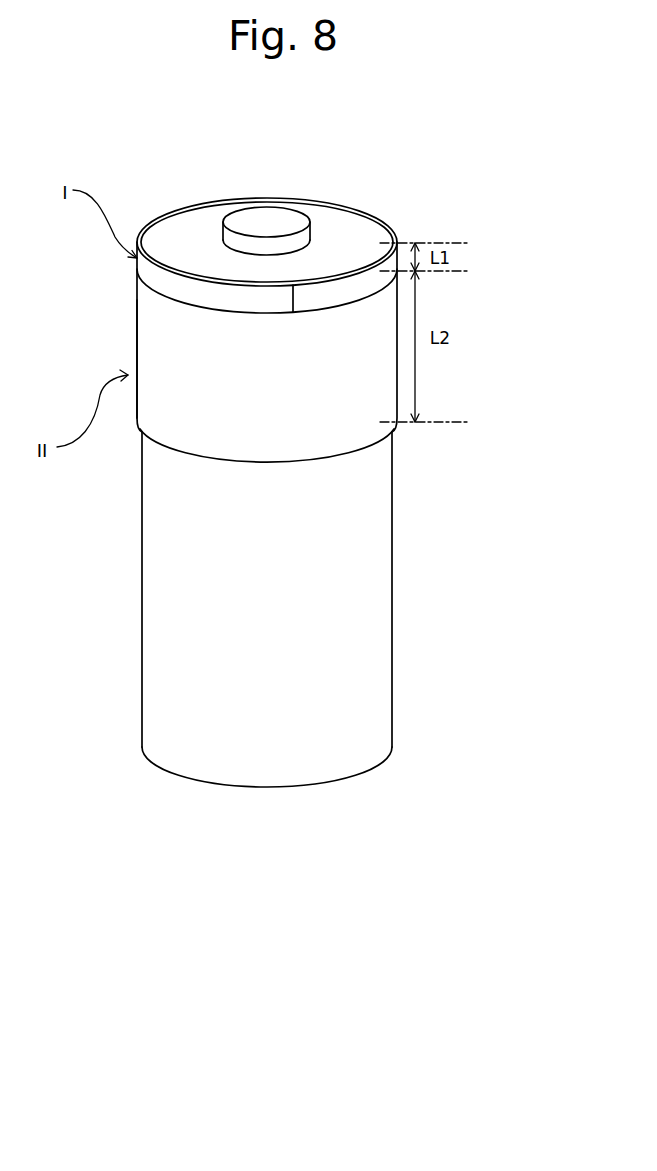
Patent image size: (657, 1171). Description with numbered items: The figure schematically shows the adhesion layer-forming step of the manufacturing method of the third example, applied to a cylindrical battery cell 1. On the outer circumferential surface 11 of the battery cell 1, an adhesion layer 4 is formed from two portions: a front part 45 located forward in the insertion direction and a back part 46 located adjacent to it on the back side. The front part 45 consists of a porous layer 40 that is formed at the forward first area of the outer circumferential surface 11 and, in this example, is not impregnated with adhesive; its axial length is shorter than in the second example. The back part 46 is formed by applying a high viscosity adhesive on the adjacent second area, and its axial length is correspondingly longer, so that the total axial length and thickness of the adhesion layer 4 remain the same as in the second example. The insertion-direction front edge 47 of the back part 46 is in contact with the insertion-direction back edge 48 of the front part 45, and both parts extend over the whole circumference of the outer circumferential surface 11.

The battery cell 1 is at (374, 567).
The outer circumferential surface 11 is at (315, 498).
The adhesion layer 4 is at (44, 287).
The porous layer 40 is at (342, 287).
The front part 45 is at (148, 265).
The back part 46 is at (153, 367).
The insertion-direction front edge 47 is at (228, 312).
The insertion-direction back edge 48 is at (268, 313).